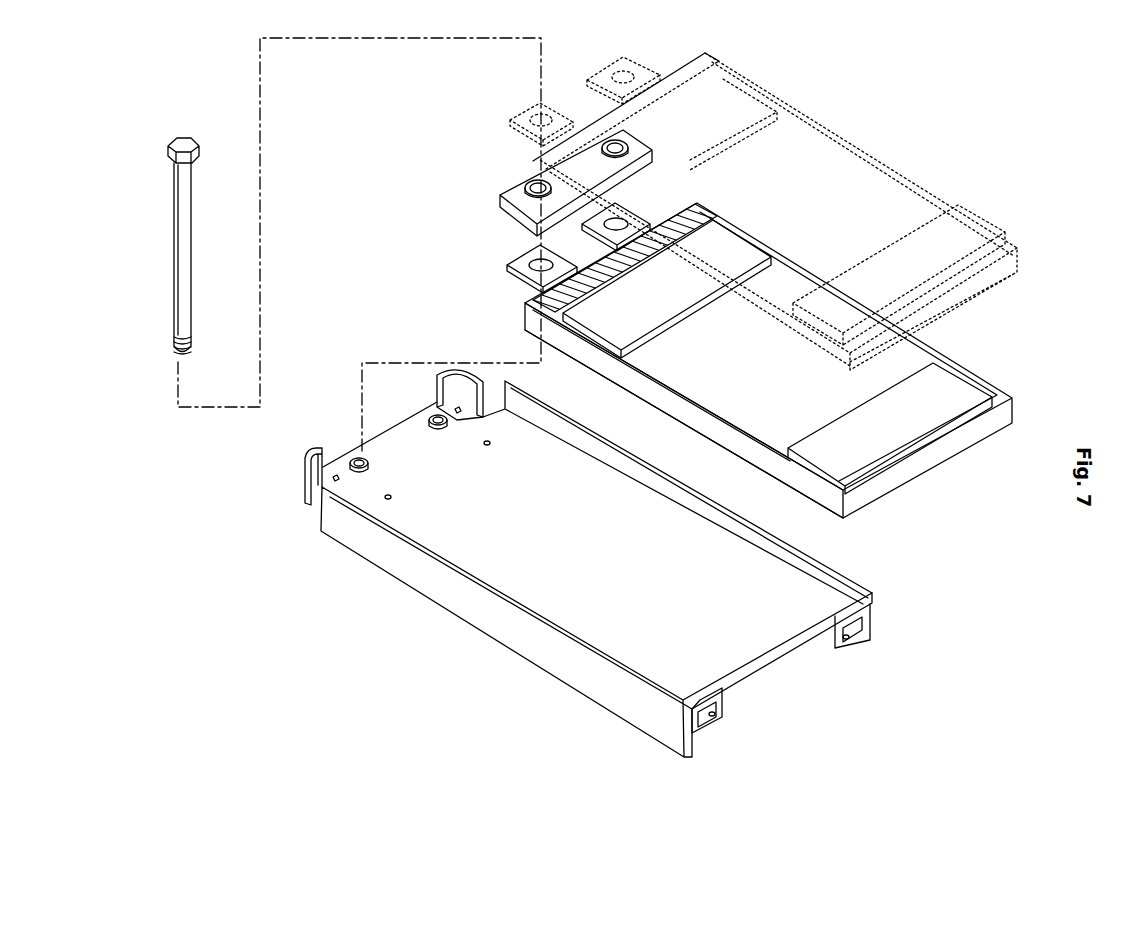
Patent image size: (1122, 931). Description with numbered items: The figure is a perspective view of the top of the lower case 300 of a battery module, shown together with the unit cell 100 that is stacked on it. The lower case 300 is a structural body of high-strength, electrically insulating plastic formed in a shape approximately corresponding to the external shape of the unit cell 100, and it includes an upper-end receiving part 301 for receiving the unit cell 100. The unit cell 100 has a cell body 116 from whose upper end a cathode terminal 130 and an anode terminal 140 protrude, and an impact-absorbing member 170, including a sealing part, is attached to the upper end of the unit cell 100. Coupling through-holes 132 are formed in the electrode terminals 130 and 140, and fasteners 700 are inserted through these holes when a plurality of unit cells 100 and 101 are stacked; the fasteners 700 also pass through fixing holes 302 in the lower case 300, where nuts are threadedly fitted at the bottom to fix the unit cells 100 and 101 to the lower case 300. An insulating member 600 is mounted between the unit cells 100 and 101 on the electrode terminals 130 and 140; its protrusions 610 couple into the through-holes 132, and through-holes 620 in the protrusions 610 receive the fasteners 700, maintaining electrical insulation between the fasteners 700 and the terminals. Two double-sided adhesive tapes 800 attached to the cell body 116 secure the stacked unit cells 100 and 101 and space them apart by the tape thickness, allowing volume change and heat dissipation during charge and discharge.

The unit cell 100 is at (950, 483).
The unit cell 101 is at (888, 132).
The cell body 116 is at (722, 436).
The cathode terminal 130 is at (508, 265).
The coupling through-hole 132 is at (540, 270).
The anode terminal 140 is at (637, 207).
The impact-absorbing member 170 is at (637, 262).
The lower case 300 is at (375, 548).
The upper-end receiving part 301 is at (743, 643).
The fixing hole 302 is at (322, 467).
The insulating member 600 is at (500, 197).
The protrusion 610 is at (528, 188).
The through-hole 620 is at (536, 180).
The fastener 700 is at (178, 237).
The double-sided adhesive tape 800 is at (935, 378).